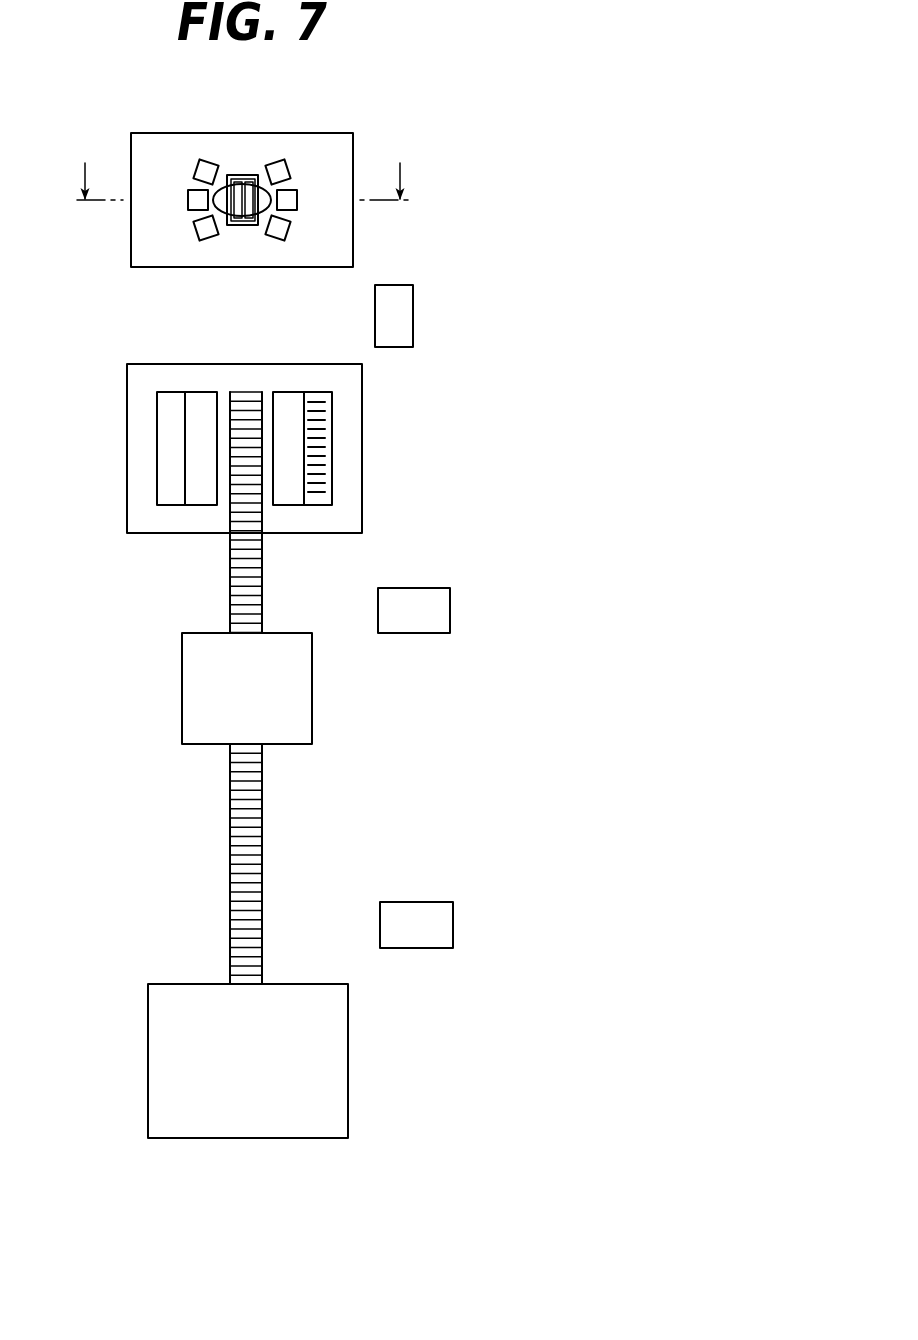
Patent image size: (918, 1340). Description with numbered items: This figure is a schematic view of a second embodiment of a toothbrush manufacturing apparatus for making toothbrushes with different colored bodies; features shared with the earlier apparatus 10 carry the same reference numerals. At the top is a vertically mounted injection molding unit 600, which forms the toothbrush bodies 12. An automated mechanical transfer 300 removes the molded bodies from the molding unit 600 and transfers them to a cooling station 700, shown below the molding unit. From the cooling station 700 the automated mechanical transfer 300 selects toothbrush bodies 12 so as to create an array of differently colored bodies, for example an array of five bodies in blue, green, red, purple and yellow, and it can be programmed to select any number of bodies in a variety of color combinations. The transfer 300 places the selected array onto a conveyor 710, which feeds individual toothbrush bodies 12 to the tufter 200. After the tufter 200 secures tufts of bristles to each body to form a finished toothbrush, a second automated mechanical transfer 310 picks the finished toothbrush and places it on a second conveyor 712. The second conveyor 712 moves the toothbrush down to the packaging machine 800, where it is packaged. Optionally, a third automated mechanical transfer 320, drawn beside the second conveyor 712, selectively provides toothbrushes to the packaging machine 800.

The apparatus 10 is at (541, 181).
The toothbrush bodies 12 is at (315, 397).
The tufter 200 is at (212, 690).
The automated mechanical transfer 300 is at (407, 313).
The second automated mechanical transfer 310 is at (442, 610).
The third automated mechanical transfer 320 is at (440, 922).
The injection molding unit 600 is at (368, 144).
The cooling station 700 is at (379, 410).
The conveyor 710 is at (201, 582).
The second conveyor 712 is at (286, 814).
The packaging machine 800 is at (310, 1071).